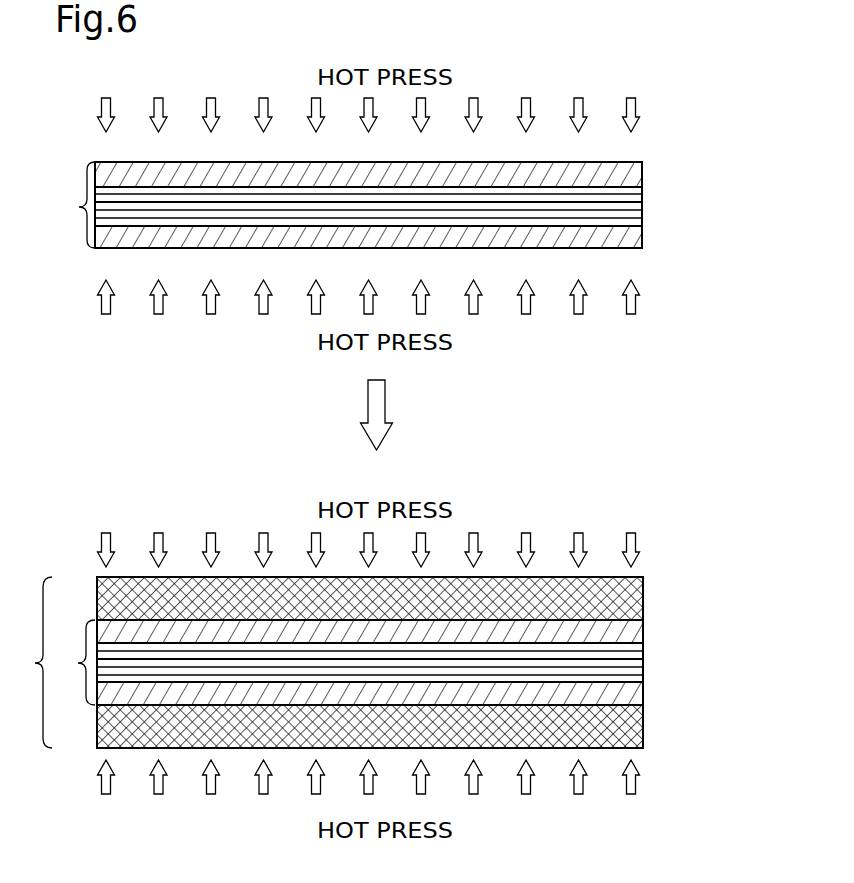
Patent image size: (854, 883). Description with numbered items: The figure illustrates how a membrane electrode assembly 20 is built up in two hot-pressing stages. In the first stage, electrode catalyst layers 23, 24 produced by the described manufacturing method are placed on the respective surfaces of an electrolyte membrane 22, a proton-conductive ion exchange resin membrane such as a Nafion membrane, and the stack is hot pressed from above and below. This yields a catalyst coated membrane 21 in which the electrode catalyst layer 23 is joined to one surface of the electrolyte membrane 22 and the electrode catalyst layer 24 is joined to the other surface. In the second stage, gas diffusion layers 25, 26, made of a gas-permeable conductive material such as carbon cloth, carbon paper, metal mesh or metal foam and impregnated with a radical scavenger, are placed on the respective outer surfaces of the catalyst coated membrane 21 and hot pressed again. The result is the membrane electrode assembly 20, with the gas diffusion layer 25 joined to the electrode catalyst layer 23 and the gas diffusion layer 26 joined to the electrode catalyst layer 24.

The membrane electrode assembly 20 is at (29, 662).
The catalyst coated membrane 21 is at (71, 433).
The electrolyte membrane 22 is at (642, 204).
The electrode catalyst layer 23 is at (642, 173).
The electrode catalyst layer 24 is at (642, 236).
The gas diffusion layer 25 is at (643, 598).
The gas diffusion layer 26 is at (643, 727).